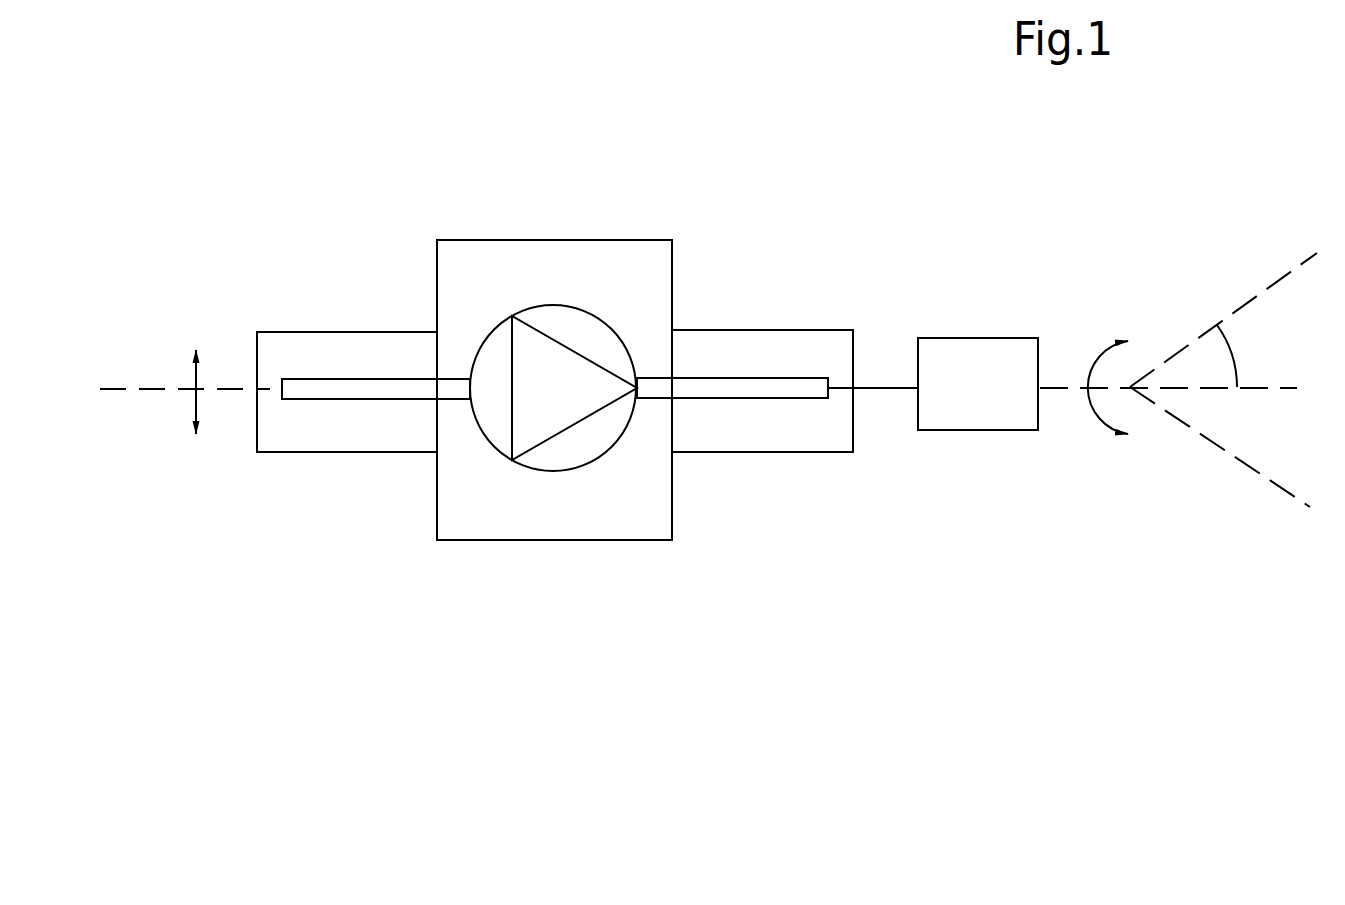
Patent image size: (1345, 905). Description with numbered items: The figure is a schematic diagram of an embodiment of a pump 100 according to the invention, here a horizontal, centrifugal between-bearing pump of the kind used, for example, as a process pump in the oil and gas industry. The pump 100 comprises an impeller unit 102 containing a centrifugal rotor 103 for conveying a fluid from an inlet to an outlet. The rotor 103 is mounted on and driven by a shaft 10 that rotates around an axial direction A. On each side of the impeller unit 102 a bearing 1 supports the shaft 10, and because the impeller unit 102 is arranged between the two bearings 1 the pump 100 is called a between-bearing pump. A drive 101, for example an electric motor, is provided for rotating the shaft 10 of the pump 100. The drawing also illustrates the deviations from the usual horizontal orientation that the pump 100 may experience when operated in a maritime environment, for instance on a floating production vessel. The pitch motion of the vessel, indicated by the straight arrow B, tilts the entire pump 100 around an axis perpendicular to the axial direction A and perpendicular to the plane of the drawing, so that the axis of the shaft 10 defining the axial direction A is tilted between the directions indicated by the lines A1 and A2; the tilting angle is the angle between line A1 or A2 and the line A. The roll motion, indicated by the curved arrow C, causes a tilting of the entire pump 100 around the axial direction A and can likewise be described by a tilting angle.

The pump 100 is at (742, 126).
The bearing 1 is at (333, 330).
The shaft 10 is at (759, 390).
The drive 101 is at (980, 433).
The impeller unit 102 is at (517, 544).
The centrifugal rotor 103 is at (593, 460).
The axial direction A is at (118, 392).
The straight arrow indicating pitch motion B is at (194, 377).
The curved arrow indicating roll motion C is at (1092, 418).
The line indicating tilted direction A1 is at (1270, 283).
The line indicating tilted direction A2 is at (1270, 484).